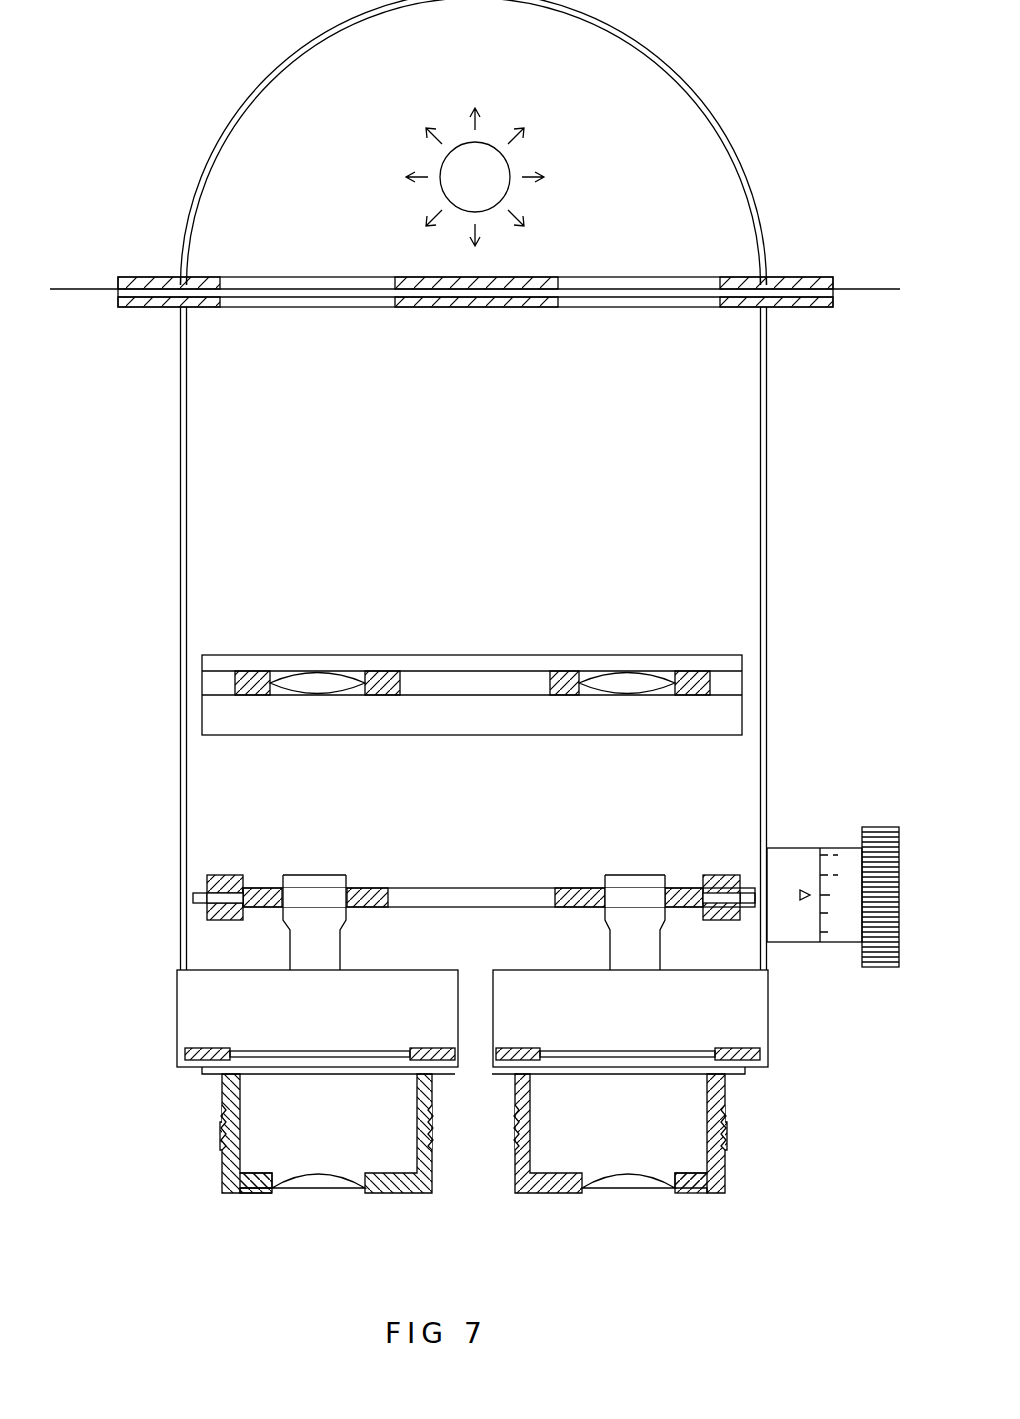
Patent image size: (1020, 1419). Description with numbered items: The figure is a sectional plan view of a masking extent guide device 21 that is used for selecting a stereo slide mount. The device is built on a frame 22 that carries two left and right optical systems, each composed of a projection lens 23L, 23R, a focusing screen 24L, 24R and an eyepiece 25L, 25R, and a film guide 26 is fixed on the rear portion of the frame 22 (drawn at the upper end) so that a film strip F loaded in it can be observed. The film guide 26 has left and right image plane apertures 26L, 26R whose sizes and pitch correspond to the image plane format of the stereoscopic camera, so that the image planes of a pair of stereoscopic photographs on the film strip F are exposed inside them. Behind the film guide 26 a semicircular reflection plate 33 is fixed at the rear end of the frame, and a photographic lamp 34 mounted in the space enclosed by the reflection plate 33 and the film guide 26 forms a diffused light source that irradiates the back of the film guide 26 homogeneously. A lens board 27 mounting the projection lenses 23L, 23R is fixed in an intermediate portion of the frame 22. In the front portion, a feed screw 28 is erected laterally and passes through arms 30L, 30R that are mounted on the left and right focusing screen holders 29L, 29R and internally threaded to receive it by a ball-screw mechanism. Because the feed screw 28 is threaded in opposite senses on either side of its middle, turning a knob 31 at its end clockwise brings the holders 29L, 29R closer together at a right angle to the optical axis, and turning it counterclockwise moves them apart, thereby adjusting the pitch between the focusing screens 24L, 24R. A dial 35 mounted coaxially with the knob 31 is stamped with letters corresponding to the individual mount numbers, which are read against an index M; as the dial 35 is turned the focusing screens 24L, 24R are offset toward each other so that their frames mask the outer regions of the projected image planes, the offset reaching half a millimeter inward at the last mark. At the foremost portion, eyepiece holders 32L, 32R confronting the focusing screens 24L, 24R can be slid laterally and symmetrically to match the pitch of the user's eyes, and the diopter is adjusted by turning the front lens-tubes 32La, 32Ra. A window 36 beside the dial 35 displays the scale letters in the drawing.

The masking extent guide device 21 is at (180, 155).
The frame 22 is at (215, 460).
The semicircular reflection plate 33 is at (256, 112).
The photographic lamp 34 is at (457, 145).
The film strip F is at (96, 293).
The film guide 26 is at (479, 288).
The left image plane aperture 26L is at (270, 300).
The right image plane aperture 26R is at (690, 300).
The lens board 27 is at (469, 724).
The left projection lens 23L is at (295, 695).
The right projection lens 23R is at (665, 690).
The feed screw 28 is at (406, 886).
The left arm 30L is at (293, 943).
The right arm 30R is at (650, 948).
The left focusing screen holder 29L is at (205, 1003).
The right focusing screen holder 29R is at (745, 1003).
The left focusing screen 24L is at (250, 1049).
The right focusing screen 24R is at (712, 1050).
The left eyepiece holder 32L is at (290, 1168).
The right eyepiece holder 32R is at (679, 1168).
The left front lens-tube 32La is at (222, 1165).
The right front lens-tube 32Ra is at (725, 1165).
The left eyepiece 25L is at (282, 1190).
The right eyepiece 25R is at (663, 1190).
The knob 31 is at (885, 828).
The dial 35 is at (832, 850).
The indicator window 36 is at (815, 851).
The index M is at (806, 888).